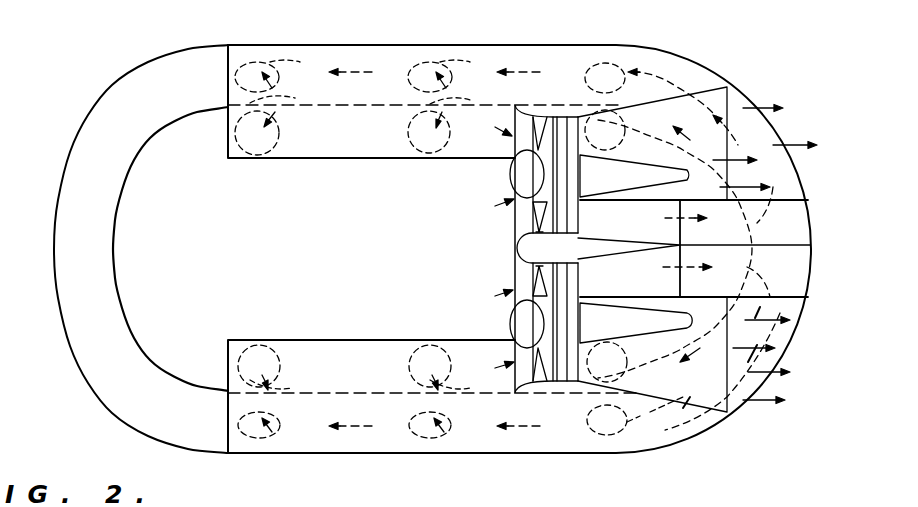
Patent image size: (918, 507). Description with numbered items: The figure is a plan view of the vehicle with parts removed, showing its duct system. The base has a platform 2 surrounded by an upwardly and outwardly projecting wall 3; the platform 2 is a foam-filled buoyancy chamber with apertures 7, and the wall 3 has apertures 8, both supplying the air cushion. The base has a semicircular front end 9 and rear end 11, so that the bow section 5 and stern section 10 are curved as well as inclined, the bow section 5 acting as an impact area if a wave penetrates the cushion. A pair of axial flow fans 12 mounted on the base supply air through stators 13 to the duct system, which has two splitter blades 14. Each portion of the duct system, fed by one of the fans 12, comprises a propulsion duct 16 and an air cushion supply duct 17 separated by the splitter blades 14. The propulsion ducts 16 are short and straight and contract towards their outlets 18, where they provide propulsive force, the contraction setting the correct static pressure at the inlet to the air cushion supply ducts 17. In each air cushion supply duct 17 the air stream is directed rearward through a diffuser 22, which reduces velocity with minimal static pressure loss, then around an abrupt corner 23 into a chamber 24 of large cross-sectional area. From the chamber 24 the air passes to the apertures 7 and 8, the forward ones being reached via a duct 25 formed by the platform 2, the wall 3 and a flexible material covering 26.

The platform 2 is at (186, 190).
The wall 3 is at (153, 95).
The bow section 5 is at (80, 137).
The apertures 7 is at (252, 146).
The apertures 8 is at (258, 68).
The front end 9 is at (83, 262).
The stern section 10 is at (818, 223).
The rear end 11 is at (750, 265).
The axial flow fans 12 is at (533, 125).
The stators 13 is at (567, 158).
The splitter blades 14 is at (636, 204).
The propulsion duct 16 is at (723, 87).
The air cushion supply duct 17 is at (658, 236).
The outlets 18 is at (743, 110).
The diffuser 22 is at (657, 263).
The abrupt corner 23 is at (733, 197).
The chamber 24 is at (777, 337).
The duct 25 is at (358, 100).
The flexible material covering 26 is at (345, 161).